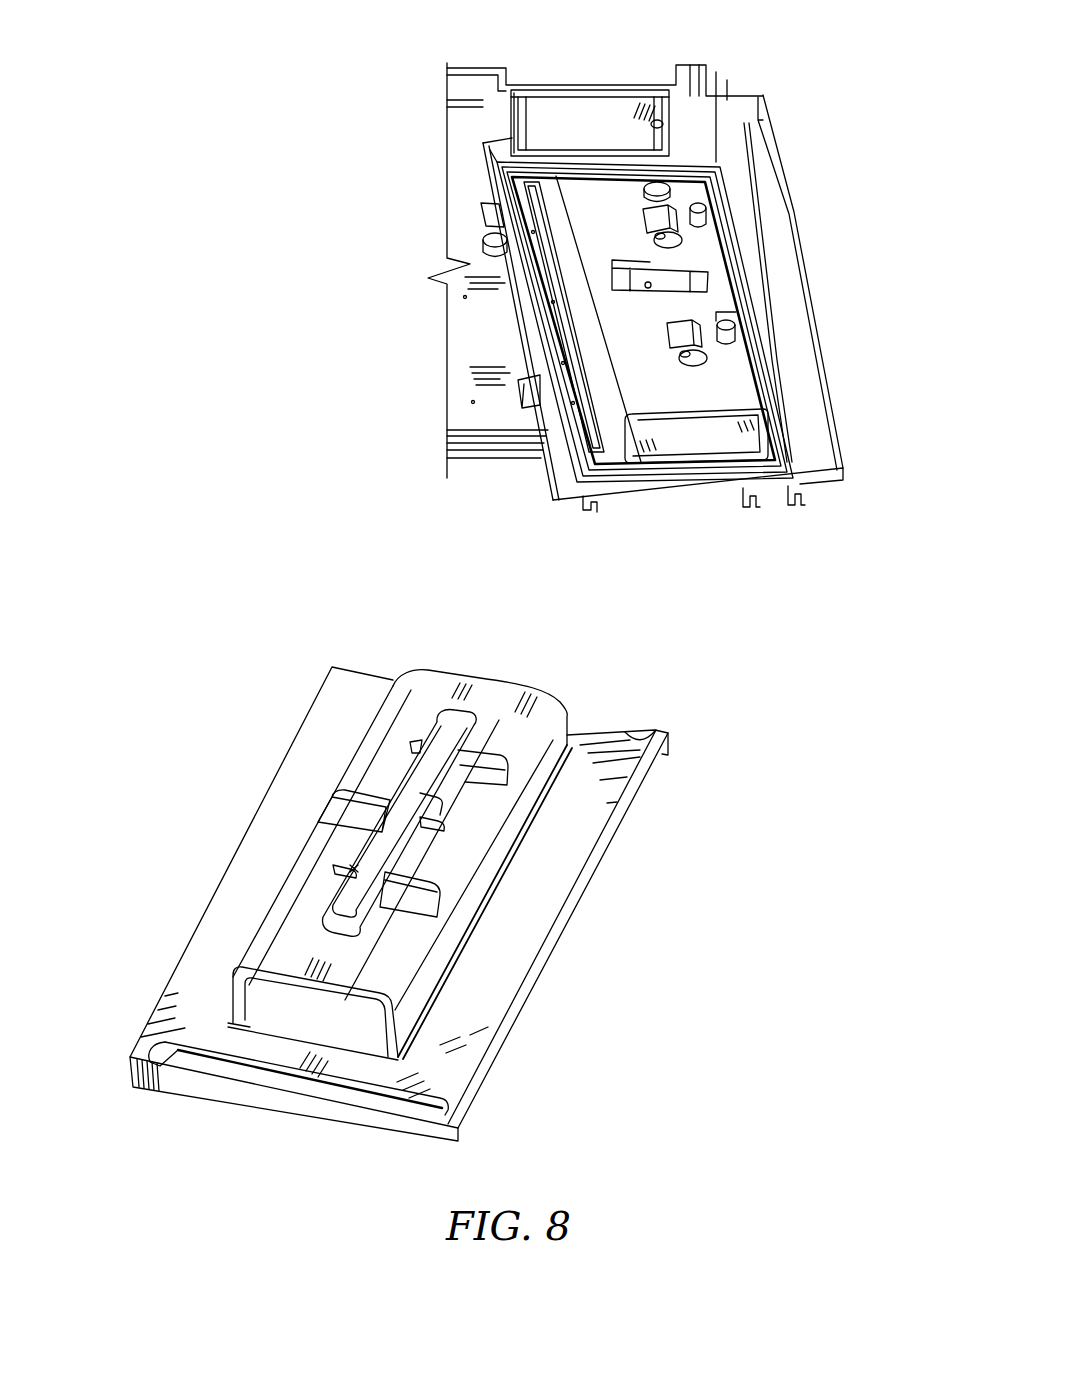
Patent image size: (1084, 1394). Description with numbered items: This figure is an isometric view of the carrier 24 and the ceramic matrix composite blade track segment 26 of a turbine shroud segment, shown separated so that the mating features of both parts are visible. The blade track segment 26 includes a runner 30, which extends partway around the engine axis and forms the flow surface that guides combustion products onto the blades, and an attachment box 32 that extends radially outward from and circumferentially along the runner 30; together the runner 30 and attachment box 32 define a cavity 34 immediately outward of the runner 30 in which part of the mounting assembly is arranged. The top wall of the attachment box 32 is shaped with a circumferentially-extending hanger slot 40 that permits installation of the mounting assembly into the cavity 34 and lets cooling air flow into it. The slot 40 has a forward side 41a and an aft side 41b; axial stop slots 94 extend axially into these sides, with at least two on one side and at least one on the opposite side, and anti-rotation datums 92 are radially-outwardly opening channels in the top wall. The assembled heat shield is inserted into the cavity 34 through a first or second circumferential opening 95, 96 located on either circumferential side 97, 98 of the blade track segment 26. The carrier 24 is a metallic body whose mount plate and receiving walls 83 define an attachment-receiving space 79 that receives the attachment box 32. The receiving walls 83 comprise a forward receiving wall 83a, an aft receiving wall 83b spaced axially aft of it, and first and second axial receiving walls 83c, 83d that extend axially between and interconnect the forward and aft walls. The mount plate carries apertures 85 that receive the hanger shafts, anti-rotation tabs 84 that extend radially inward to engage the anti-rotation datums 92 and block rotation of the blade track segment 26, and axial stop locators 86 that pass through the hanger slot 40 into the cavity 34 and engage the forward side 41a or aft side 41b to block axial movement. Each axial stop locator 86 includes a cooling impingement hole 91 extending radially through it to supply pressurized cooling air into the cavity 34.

The carrier 24 is at (864, 98).
The blade track segment 26 is at (124, 1106).
The runner 30 is at (530, 1002).
The attachment box 32 is at (403, 664).
The cavity 34 is at (290, 1006).
The circumferentially-extending hanger slot 40 is at (452, 720).
The forward side 41a is at (352, 866).
The aft side 41b is at (420, 791).
The attachment-receiving space 79 is at (600, 188).
The receiving walls 83 is at (655, 347).
The forward receiving wall 83a is at (481, 174).
The aft receiving wall 83b is at (756, 302).
The first axial receiving wall 83c is at (600, 144).
The second axial receiving wall 83d is at (702, 448).
The anti-rotation tabs 84 is at (698, 199).
The apertures 85 is at (626, 220).
The axial stop locators 86 is at (711, 276).
The cooling impingement holes 91 is at (686, 240).
The anti-rotation datums 92 is at (495, 766).
The axial stop slots 94 is at (408, 748).
The first circumferential opening 95 is at (352, 1056).
The second circumferential opening 96 is at (538, 684).
The first circumferential side 97 is at (297, 961).
The second circumferential side 98 is at (452, 662).